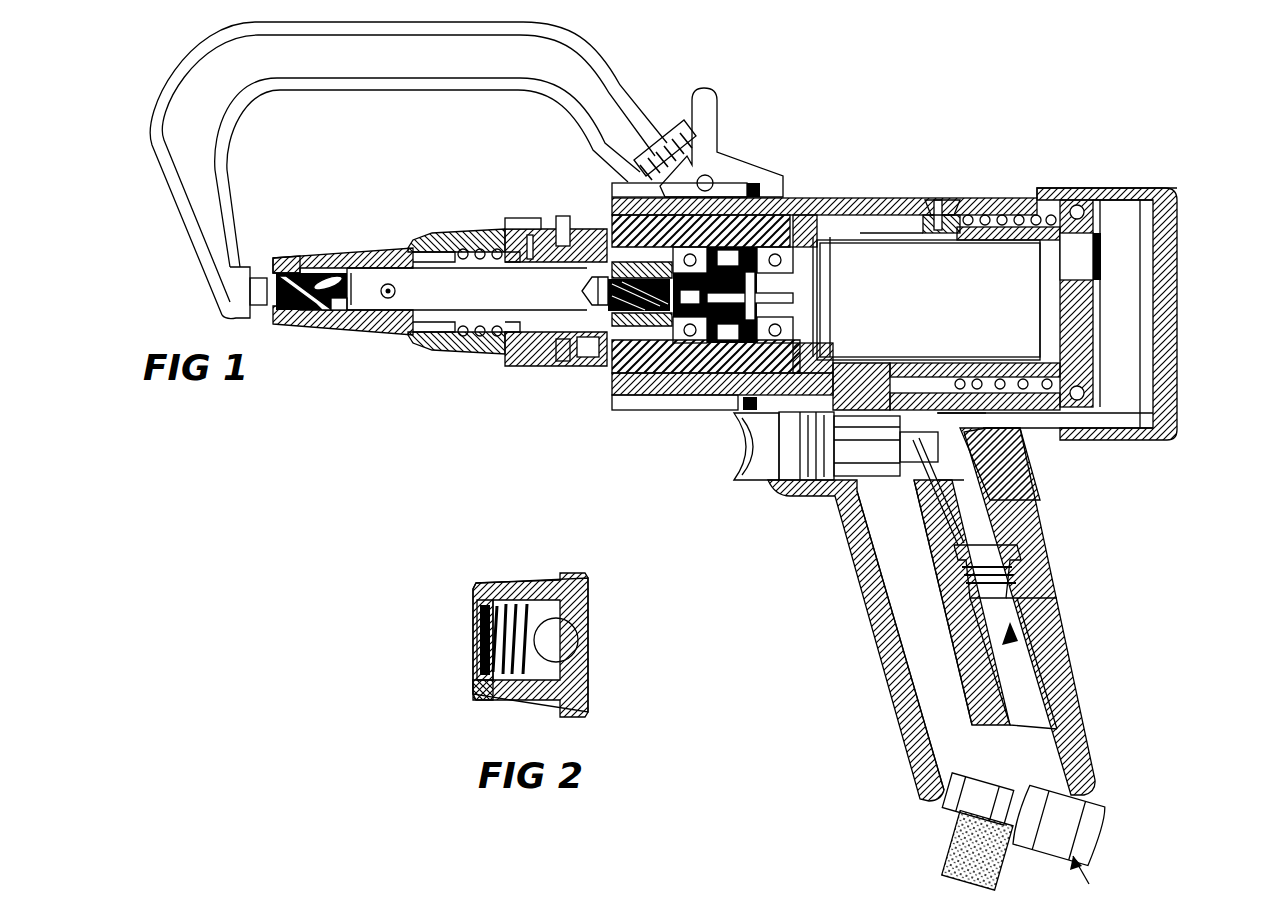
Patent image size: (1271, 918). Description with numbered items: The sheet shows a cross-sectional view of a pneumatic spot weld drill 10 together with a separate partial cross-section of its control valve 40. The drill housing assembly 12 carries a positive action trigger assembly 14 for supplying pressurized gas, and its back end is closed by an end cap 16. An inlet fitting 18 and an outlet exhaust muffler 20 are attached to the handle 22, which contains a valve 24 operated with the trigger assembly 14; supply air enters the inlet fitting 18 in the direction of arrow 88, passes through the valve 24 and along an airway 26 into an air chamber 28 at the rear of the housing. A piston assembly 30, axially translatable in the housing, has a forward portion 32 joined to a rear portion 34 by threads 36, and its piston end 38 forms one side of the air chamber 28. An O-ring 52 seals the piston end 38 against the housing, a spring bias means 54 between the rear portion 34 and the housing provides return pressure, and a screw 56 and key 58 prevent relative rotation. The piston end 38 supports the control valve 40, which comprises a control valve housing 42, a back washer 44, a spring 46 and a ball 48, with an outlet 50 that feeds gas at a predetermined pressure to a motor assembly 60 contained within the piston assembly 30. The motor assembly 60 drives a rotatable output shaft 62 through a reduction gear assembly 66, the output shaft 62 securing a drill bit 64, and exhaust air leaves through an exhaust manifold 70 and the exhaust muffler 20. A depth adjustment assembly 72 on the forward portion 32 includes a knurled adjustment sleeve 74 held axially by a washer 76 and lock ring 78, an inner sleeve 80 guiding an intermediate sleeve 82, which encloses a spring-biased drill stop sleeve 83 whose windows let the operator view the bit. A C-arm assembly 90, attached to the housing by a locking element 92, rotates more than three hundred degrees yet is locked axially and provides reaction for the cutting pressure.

In FIG. 1, the pneumatic spot weld drill 10 is at (1028, 467).
In FIG. 1, the drill housing assembly 12 is at (817, 193).
In FIG. 1, the positive action trigger assembly 14 is at (748, 480).
In FIG. 1, the end cap 16 is at (1178, 263).
In FIG. 1, the inlet fitting 18 is at (1101, 805).
In FIG. 1, the outlet exhaust muffler 20 is at (970, 864).
In FIG. 1, the handle 22 is at (886, 698).
In FIG. 1, the valve 24 is at (1017, 559).
In FIG. 1, the airway 26 is at (1097, 423).
In FIG. 1, the air chamber 28 is at (1143, 198).
In FIG. 1, the piston assembly 30 is at (1007, 200).
In FIG. 1, the forward portion 32 is at (787, 200).
In FIG. 1, the rear portion 34 is at (977, 200).
In FIG. 1, the threads 36 is at (800, 203).
In FIG. 1, the piston end 38 is at (1100, 367).
In FIG. 1, the control valve 40 is at (1100, 280).
In FIG. 2, the control valve 40 is at (470, 598).
In FIG. 2, the control valve housing 42 is at (533, 580).
In FIG. 2, the back washer 44 is at (480, 676).
In FIG. 2, the spring 46 is at (497, 640).
In FIG. 2, the ball 48 is at (585, 640).
In FIG. 2, the outlet 50 is at (480, 631).
In FIG. 1, the O-ring 52 is at (1087, 200).
In FIG. 1, the spring bias means 54 is at (1040, 197).
In FIG. 1, the screw 56 is at (940, 200).
In FIG. 1, the key 58 is at (927, 210).
In FIG. 1, the motor assembly 60 is at (700, 395).
In FIG. 1, the output shaft 62 is at (607, 374).
In FIG. 1, the drill bit 64 is at (337, 322).
In FIG. 1, the reduction gear assembly 66 is at (636, 300).
In FIG. 1, the exhaust manifold 70 is at (898, 577).
In FIG. 1, the depth adjustment assembly 72 is at (487, 367).
In FIG. 1, the knurled adjustment sleeve 74 is at (542, 218).
In FIG. 1, the washer 76 is at (574, 242).
In FIG. 1, the lock ring 78 is at (578, 367).
In FIG. 1, the inner sleeve 80 is at (500, 236).
In FIG. 1, the intermediate sleeve 82 is at (433, 232).
In FIG. 1, the drill stop sleeve 83 is at (340, 250).
In FIG. 1, the arrow 88 is at (1093, 879).
In FIG. 1, the C-arm assembly 90 is at (202, 282).
In FIG. 1, the locking element 92 is at (722, 122).